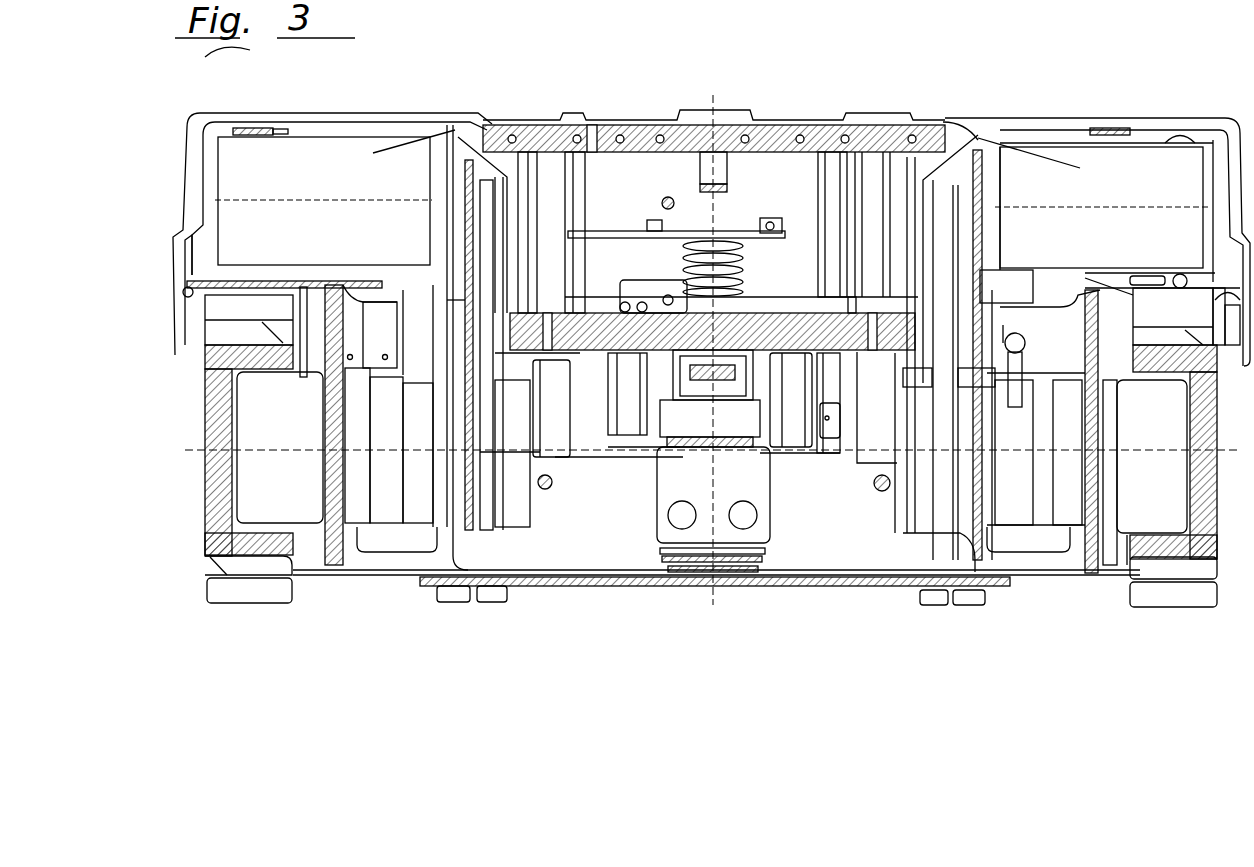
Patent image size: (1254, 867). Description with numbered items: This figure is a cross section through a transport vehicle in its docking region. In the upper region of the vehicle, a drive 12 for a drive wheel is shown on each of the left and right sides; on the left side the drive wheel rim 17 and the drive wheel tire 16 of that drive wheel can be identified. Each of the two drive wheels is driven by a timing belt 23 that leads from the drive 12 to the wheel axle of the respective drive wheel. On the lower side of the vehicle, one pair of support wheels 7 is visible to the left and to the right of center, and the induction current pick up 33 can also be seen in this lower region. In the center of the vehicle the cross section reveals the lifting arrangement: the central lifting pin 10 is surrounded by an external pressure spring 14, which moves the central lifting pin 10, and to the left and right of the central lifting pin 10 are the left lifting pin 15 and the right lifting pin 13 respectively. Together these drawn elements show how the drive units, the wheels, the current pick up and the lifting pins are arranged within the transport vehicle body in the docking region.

The support wheels 7 is at (945, 594).
The central lifting pin 10 is at (735, 207).
The drive 12 is at (550, 115).
The right lifting pin 13 is at (845, 250).
The external pressure spring 14 is at (726, 240).
The left lifting pin 15 is at (575, 210).
The drive wheel tire 16 is at (280, 592).
The drive wheel rim 17 is at (230, 545).
The timing belt 23 is at (945, 463).
The induction current pick up 33 is at (594, 588).